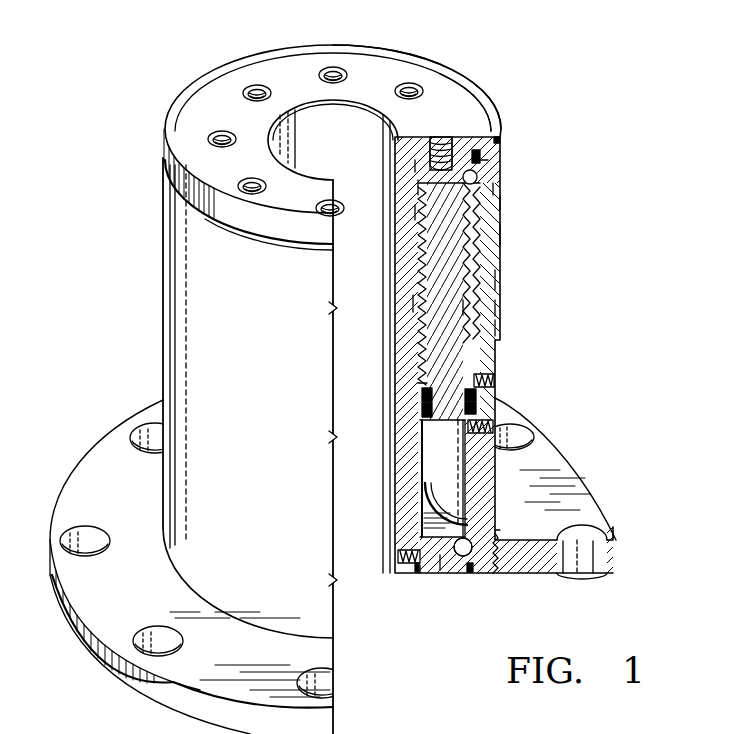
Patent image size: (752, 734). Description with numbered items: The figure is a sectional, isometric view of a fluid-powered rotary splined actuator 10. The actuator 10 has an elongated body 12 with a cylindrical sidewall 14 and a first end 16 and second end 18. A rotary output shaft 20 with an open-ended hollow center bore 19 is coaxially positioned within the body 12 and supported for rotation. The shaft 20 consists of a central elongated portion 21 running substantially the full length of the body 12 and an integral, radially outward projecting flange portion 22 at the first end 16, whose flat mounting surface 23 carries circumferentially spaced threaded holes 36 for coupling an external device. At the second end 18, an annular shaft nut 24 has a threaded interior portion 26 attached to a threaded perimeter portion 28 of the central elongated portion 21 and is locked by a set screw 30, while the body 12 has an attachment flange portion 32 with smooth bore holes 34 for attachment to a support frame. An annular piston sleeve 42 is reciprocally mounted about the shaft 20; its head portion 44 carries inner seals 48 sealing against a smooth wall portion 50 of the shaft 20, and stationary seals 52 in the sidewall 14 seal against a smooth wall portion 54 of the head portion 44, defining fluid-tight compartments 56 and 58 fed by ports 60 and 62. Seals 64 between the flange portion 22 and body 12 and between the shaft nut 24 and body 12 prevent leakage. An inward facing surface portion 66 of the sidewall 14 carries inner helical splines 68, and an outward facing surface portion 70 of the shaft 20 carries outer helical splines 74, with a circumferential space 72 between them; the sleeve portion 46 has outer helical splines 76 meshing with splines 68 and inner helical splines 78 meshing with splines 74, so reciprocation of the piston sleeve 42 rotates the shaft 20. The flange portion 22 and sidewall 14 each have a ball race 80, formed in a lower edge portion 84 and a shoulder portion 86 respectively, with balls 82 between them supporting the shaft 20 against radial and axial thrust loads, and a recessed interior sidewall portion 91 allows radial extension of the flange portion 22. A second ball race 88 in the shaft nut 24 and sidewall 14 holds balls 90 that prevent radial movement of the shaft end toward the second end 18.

The rotary actuator 10 is at (602, 84).
The body 12 is at (497, 260).
The cylindrical sidewall 14 is at (503, 218).
The first end 16 is at (480, 113).
The second end 18 is at (487, 573).
The hollow center bore 19 is at (353, 125).
The rotary output shaft 20 is at (408, 362).
The central elongated portion 21 is at (407, 335).
The flange portion 22 is at (445, 100).
The mounting surface 23 is at (222, 102).
The shaft nut 24 is at (452, 572).
The threaded interior portion 26 is at (440, 563).
The threaded perimeter portion 28 is at (427, 573).
The set screw 30 is at (398, 567).
The attachment flange portion 32 is at (535, 577).
The smooth bore holes 34 is at (133, 432).
The threaded holes 36 is at (323, 72).
The piston sleeve 42 is at (502, 328).
The head portion 44 is at (420, 440).
The sleeve portion 46 is at (503, 280).
The inner seals 48 is at (423, 394).
The smooth wall portion 50 is at (427, 463).
The stationary seals 52 is at (470, 390).
The smooth wall portion 54 is at (480, 353).
The fluid-tight compartment 56 is at (418, 388).
The fluid-tight compartment 58 is at (420, 490).
The port 60 is at (478, 372).
The port 62 is at (473, 403).
The seals 64 is at (482, 147).
The inward facing surface portion 66 is at (470, 307).
The inner helical splines 68 is at (503, 308).
The outward facing surface portion 70 is at (418, 245).
The circumferential space 72 is at (420, 187).
The outer helical splines 74 is at (413, 303).
The outer helical splines 76 is at (500, 233).
The inner helical splines 78 is at (415, 212).
The ball race 80 is at (415, 165).
The balls 82 is at (478, 173).
The lower edge portion 84 is at (484, 161).
The shoulder portion 86 is at (503, 203).
The ball race 88 is at (470, 540).
The balls 90 is at (498, 532).
The recessed interior sidewall portion 91 is at (503, 133).